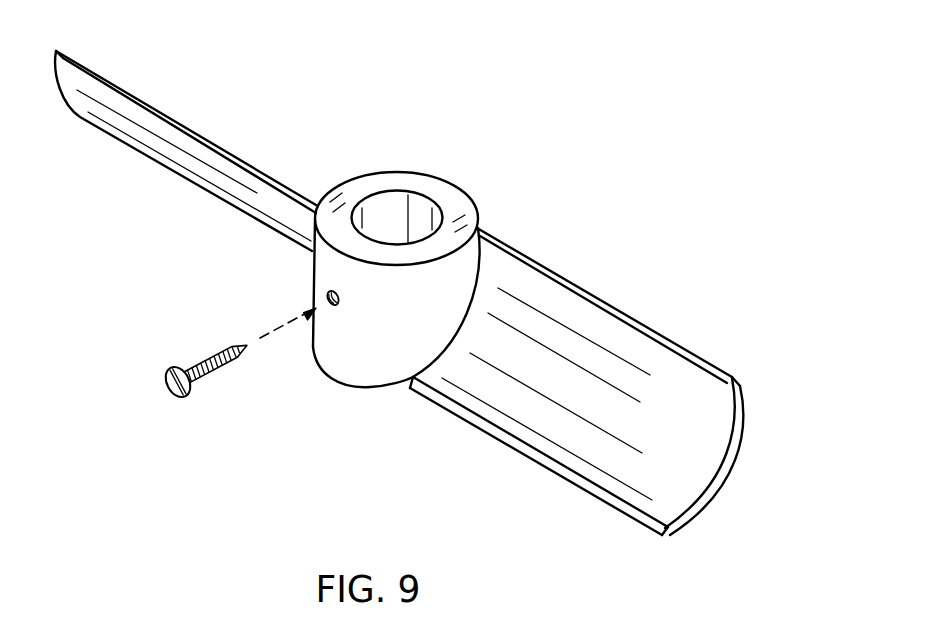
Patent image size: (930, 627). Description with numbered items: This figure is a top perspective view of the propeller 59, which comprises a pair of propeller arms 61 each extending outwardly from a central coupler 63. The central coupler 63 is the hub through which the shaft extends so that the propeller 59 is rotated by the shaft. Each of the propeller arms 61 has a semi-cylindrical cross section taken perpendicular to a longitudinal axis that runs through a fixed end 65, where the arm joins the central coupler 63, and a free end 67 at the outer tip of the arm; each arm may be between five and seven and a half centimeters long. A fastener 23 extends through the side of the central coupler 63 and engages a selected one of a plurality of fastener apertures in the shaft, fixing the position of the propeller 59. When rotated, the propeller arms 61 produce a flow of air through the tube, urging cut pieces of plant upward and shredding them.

The propeller 59 is at (255, 124).
The propeller arms 61 is at (186, 127).
The central coupler 63 is at (404, 172).
The fixed end 65 is at (487, 232).
The free end 67 is at (744, 408).
The fastener 23 is at (172, 366).